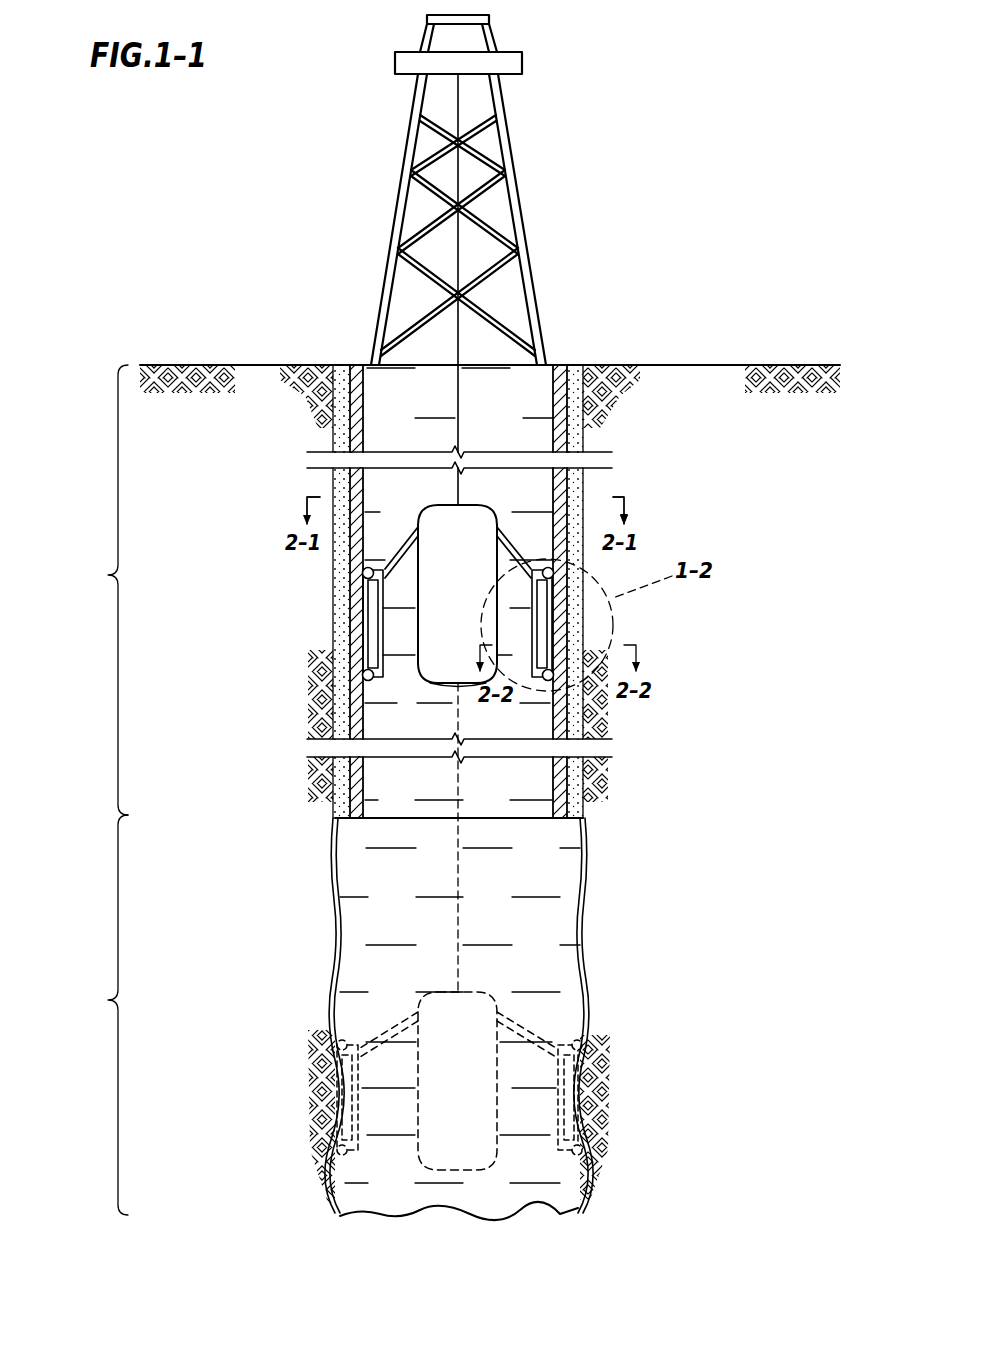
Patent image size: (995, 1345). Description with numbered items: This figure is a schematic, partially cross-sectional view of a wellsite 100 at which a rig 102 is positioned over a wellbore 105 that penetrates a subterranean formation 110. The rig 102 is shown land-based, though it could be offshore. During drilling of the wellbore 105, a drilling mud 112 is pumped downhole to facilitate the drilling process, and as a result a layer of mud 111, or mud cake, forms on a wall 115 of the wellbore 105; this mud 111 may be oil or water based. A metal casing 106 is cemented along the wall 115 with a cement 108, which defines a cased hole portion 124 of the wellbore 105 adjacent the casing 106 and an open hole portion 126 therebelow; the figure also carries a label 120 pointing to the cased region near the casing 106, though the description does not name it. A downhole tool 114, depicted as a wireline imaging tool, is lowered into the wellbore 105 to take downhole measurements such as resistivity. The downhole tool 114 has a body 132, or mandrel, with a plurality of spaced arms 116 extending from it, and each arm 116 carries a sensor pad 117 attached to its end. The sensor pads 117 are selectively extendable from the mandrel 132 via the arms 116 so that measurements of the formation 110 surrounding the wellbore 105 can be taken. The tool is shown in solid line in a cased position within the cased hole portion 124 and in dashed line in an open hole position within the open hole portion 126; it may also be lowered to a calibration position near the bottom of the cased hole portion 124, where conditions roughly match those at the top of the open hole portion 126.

The wellsite 100 is at (724, 86).
The rig 102 is at (510, 148).
The wellbore 105 is at (557, 384).
The metal casing 106 is at (567, 407).
The cement 108 is at (580, 432).
The subterranean formation 110 is at (775, 393).
The layer of mud 111 is at (334, 1192).
The drilling mud 112 is at (525, 487).
The downhole tool 114 is at (400, 683).
The wall 115 is at (598, 1176).
The arm 116 is at (403, 540).
The sensor pad 117 is at (365, 578).
The wellbore 120 is at (320, 441).
The cased hole portion 124 is at (108, 574).
The open hole portion 126 is at (108, 999).
The body 132 is at (438, 684).